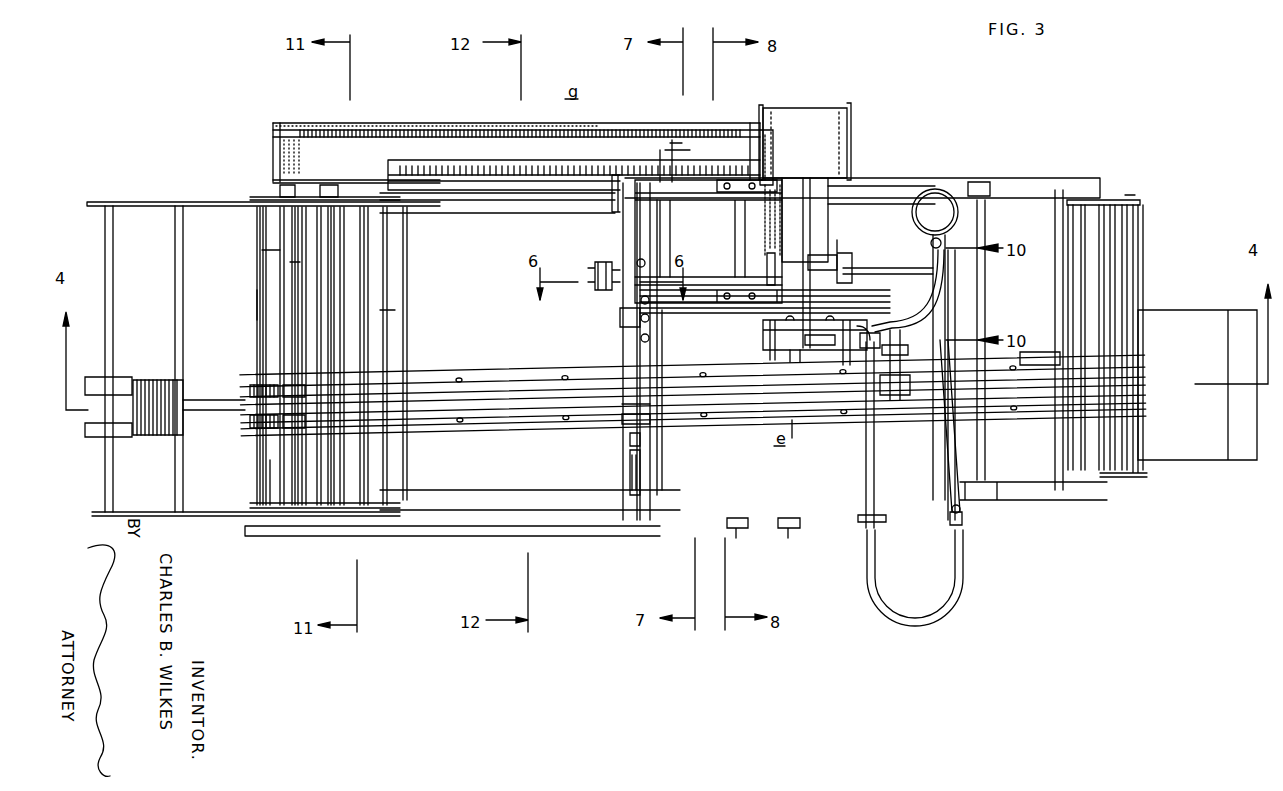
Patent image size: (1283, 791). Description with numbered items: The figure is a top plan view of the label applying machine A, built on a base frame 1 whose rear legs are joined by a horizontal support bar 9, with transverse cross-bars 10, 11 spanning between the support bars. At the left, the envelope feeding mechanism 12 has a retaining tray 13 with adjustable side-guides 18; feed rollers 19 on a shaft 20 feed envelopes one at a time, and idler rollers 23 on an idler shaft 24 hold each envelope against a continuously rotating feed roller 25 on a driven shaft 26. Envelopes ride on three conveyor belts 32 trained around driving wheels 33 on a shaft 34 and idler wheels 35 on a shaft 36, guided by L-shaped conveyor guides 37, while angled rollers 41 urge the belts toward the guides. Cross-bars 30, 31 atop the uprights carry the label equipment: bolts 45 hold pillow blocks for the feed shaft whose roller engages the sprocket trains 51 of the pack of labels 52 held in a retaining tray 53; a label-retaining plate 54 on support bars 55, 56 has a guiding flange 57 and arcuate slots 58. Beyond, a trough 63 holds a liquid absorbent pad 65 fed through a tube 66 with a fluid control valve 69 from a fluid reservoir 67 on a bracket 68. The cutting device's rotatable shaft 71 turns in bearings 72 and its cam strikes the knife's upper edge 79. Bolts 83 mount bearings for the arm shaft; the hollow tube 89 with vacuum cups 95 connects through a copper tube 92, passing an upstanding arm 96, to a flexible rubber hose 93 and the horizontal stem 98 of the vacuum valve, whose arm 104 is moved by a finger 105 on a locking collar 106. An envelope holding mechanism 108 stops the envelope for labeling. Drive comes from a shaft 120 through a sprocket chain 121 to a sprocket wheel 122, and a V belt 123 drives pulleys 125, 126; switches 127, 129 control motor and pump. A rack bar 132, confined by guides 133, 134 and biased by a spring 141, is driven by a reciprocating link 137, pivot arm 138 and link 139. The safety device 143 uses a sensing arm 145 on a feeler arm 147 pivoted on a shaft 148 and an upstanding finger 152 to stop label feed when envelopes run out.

The base frame 1 is at (1018, 178).
The horizontal support bar 9 is at (982, 182).
The cross-bar 10 is at (398, 280).
The cross-bar 11 is at (1068, 210).
The envelope feeding mechanism 12 is at (252, 240).
The retaining tray 13 is at (212, 372).
The side-guides 18 is at (115, 380).
The feed rollers 19 is at (256, 390).
The shaft 20 is at (258, 304).
The idler rollers 23 is at (275, 428).
The idler shaft 24 is at (300, 268).
The feed roller 25 is at (262, 252).
The driven shaft 26 is at (278, 192).
The cross-bar 30 is at (650, 520).
The cross-bar 31 is at (948, 452).
The conveyor belts 32 is at (510, 372).
The driving wheels 33 is at (340, 470).
The shaft 34 is at (356, 128).
The idler wheels 35 is at (1115, 262).
The shaft 36 is at (1120, 192).
The conveyor guides 37 is at (544, 372).
The rollers 41 is at (571, 375).
The bolts 45 is at (638, 260).
The sprocket trains 51 is at (835, 150).
The pack of labels 52 is at (810, 120).
The retaining tray 53 is at (848, 120).
The label-retaining plate 54 is at (810, 215).
The support bar 55 is at (948, 292).
The support bar 56 is at (890, 178).
The flange 57 is at (808, 250).
The arcuate slots 58 is at (852, 260).
The trough 63 is at (790, 362).
The liquid absorbent pad 65 is at (762, 335).
The tube 66 is at (946, 276).
The fluid reservoir 67 is at (940, 192).
The bracket 68 is at (930, 188).
The fluid control valve 69 is at (945, 240).
The rotatable shaft 71 is at (735, 227).
The bearings 72 is at (728, 288).
The upper edge 79 is at (712, 312).
The bolts 83 is at (640, 338).
The hollow tube 89 is at (832, 352).
The copper tube 92 is at (864, 448).
The flexible rubber hose 93 is at (938, 608).
The vacuum cups 95 is at (790, 315).
The upstanding arm 96 is at (878, 508).
The horizontal stem 98 is at (962, 527).
The arm 104 is at (995, 495).
The finger 105 is at (1035, 360).
The locking collar 106 is at (1040, 350).
The envelope holding mechanism 108 is at (894, 402).
The shaft 120 is at (665, 452).
The sprocket chain 121 is at (700, 150).
The sprocket wheel 122 is at (745, 150).
The V belt 123 is at (412, 133).
The pulley 125 is at (292, 127).
The pulley 126 is at (272, 172).
The switch 127 is at (757, 540).
The switch 129 is at (805, 540).
The rack bar 132 is at (628, 443).
The guide 133 is at (618, 322).
The guide 134 is at (615, 426).
The reciprocating link 137 is at (612, 224).
The pivot arm 138 is at (662, 152).
The link 139 is at (672, 142).
The spring 141 is at (628, 472).
The safety device 143 is at (446, 395).
The sensing arm 145 is at (484, 395).
The feeler arm 147 is at (242, 410).
The shaft 148 is at (380, 312).
The upstanding finger 152 is at (603, 262).
The label applying machine A is at (1045, 156).